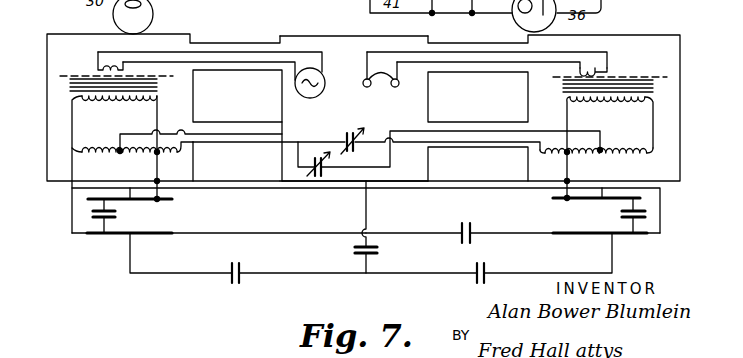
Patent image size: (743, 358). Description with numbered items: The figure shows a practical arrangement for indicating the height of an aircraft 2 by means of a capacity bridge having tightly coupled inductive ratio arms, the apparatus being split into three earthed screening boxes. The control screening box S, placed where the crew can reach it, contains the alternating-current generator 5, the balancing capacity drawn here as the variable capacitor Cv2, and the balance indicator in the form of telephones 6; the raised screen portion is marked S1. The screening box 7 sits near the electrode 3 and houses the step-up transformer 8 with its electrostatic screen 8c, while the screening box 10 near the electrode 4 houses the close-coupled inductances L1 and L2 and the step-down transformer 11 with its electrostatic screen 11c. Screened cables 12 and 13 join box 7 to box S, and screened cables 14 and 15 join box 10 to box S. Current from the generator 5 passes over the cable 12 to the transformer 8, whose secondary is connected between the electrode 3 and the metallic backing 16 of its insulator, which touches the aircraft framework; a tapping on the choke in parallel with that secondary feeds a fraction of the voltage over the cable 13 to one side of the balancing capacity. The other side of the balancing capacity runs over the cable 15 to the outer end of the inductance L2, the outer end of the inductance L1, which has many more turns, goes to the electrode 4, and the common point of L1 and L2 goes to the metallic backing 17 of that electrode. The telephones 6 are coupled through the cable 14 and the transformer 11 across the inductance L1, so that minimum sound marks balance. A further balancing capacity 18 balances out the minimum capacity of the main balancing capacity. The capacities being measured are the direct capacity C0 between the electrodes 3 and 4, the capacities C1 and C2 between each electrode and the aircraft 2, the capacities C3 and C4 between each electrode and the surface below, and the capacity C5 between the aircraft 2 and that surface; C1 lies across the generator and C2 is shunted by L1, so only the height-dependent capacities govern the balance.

The screening box 7 is at (47, 36).
The screen S1 is at (354, 36).
The screening box 10 is at (612, 36).
The screened cable 12 is at (224, 58).
The step-up transformer 8 is at (80, 72).
The electrostatic screen 8c is at (47, 62).
The control screening box S is at (90, 154).
The screened cable 13 is at (226, 135).
The generator of alternating current 5 is at (325, 80).
The screened cable 14 is at (476, 58).
The telephones 6 is at (381, 85).
The variable capacitor Cv2 is at (356, 132).
The balancing capacity 18 is at (326, 172).
The screened cable 15 is at (468, 134).
The step-down transformer 11 is at (636, 76).
The electrostatic screen 11c is at (680, 63).
The inductance L1 is at (636, 143).
The inductance L2 is at (557, 158).
The aircraft 2 is at (455, 190).
The metallic backing 16 is at (166, 199).
The capacity C1 is at (116, 213).
The electrode 3 is at (122, 234).
The metallic backing 17 is at (578, 200).
The capacity C2 is at (621, 213).
The electrode 4 is at (618, 234).
The capacity C5 is at (357, 246).
The direct capacity C0 is at (460, 250).
The capacity C3 is at (240, 286).
The capacity C4 is at (484, 284).